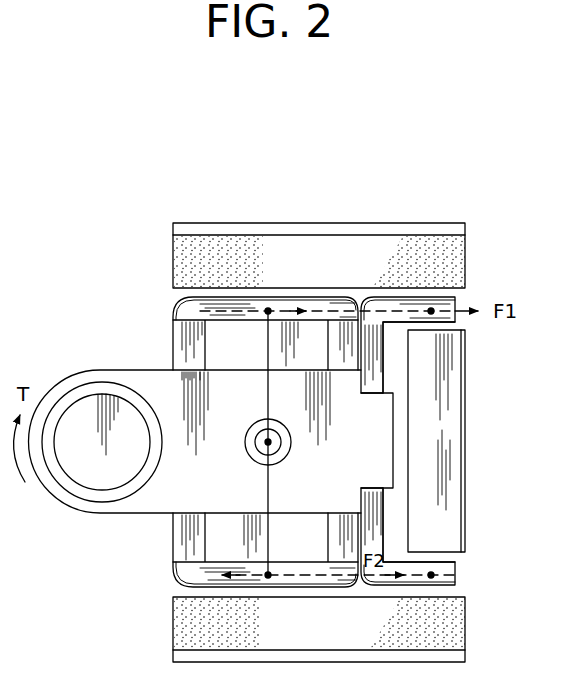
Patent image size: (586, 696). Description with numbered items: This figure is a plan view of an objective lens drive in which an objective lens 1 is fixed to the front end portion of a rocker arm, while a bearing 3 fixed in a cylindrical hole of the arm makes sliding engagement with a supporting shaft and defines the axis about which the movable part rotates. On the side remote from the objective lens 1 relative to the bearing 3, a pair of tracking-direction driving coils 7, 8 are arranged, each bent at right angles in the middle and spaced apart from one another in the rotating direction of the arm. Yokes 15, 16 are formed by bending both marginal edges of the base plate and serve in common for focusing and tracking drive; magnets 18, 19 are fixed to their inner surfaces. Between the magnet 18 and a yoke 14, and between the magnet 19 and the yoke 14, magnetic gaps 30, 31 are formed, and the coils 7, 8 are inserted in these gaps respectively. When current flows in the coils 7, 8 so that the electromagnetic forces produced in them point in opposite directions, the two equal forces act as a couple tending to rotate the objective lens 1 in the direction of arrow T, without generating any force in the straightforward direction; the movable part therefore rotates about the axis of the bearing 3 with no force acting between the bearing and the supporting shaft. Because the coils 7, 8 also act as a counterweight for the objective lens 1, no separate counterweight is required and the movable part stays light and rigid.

The objective lens 1 is at (102, 473).
The bearing 3 is at (249, 428).
The tracking-direction driving coil 7 is at (440, 303).
The tracking-direction driving coil 8 is at (447, 573).
The yoke 14 is at (452, 494).
The yoke 15 is at (178, 228).
The yoke 16 is at (173, 655).
The magnet 18 is at (178, 257).
The magnet 19 is at (180, 613).
The magnetic gap 30 is at (456, 323).
The magnetic gap 31 is at (450, 557).